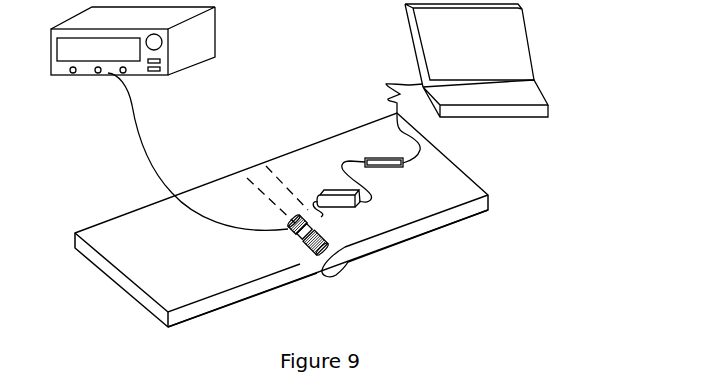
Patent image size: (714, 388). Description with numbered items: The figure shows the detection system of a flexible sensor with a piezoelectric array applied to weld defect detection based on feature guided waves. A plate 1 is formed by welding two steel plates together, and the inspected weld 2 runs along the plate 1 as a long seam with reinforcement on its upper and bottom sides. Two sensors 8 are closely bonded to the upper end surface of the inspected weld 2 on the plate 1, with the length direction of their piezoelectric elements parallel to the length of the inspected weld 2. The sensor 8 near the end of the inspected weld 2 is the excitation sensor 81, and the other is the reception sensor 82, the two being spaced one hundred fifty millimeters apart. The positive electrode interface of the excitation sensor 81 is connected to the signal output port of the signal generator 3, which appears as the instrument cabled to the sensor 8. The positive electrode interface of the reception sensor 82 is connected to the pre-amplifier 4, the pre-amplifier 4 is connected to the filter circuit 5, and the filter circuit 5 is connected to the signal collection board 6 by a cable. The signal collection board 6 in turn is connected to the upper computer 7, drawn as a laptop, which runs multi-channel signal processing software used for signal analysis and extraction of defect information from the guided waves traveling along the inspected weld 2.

The plate 1 is at (207, 197).
The inspected weld 2 is at (247, 180).
The signal generator 3 is at (197, 42).
The pre-amplifier 4 is at (332, 192).
The filter circuit 5 is at (388, 168).
The signal collection board 6 is at (385, 94).
The upper computer 7 is at (513, 62).
The sensor 8 is at (261, 247).
The excitation sensor 81 is at (313, 250).
The reception sensor 82 is at (275, 230).